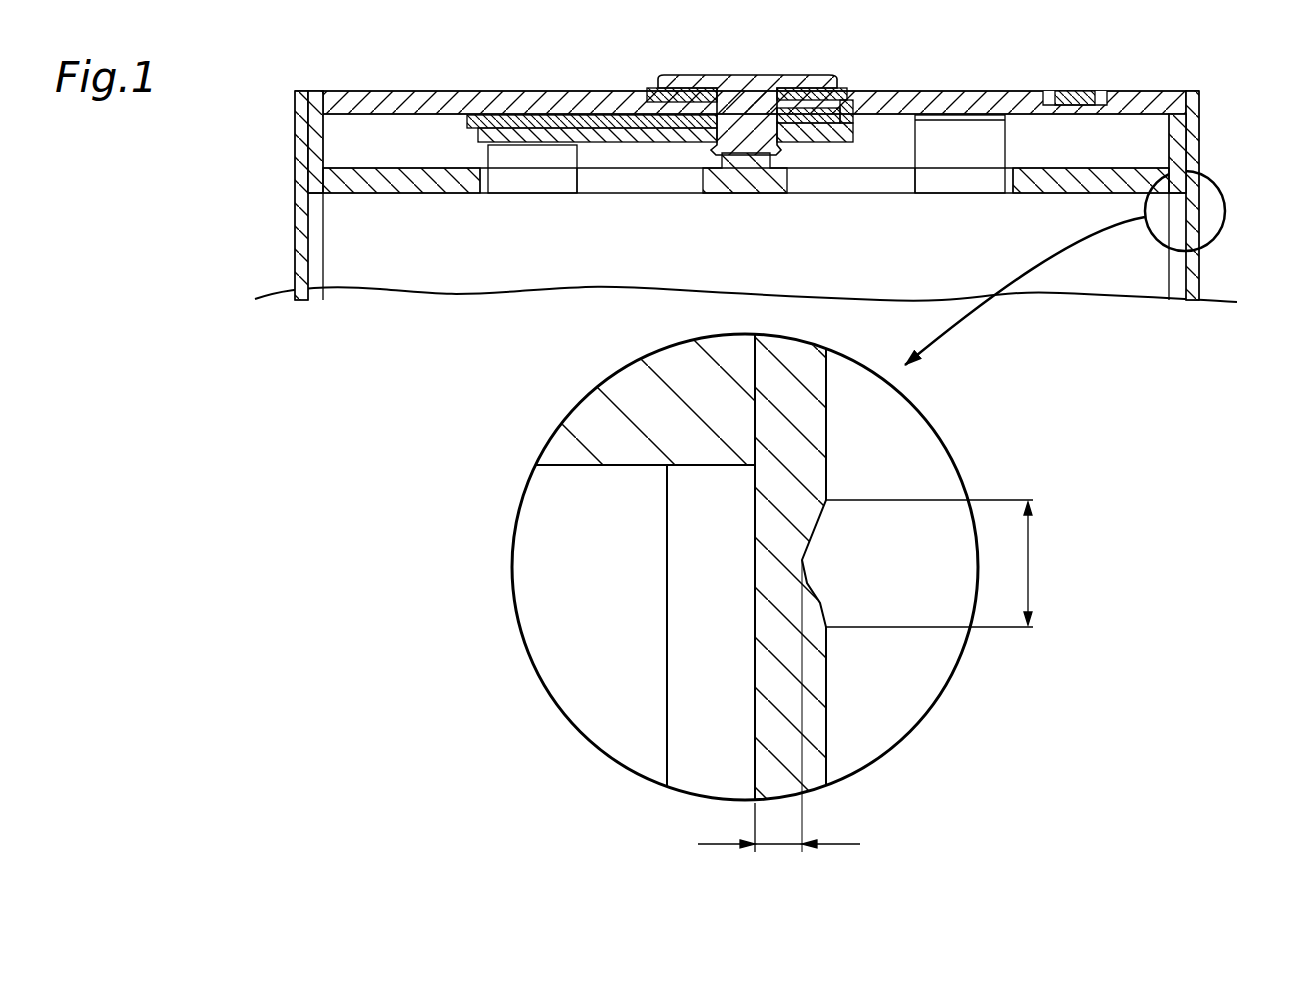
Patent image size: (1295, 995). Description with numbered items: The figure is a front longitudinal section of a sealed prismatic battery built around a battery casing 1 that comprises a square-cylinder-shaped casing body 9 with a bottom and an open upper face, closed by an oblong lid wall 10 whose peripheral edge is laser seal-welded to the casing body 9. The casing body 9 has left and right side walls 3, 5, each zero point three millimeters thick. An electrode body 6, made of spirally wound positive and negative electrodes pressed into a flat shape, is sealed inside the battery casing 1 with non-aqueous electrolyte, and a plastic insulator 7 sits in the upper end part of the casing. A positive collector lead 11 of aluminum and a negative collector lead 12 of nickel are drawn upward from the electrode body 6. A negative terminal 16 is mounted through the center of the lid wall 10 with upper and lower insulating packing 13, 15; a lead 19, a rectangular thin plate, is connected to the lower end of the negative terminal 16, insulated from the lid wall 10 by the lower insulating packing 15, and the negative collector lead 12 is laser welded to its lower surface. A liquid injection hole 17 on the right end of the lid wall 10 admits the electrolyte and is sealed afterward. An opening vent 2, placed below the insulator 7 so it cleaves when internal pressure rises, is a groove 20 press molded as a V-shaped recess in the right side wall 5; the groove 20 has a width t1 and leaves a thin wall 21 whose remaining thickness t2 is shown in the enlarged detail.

The battery casing 1 is at (262, 142).
The opening vent 2 is at (1225, 195).
The left side wall 3 is at (295, 250).
The right side wall 5 is at (1200, 276).
The electrode body 6 is at (500, 265).
The plastic insulator 7 is at (383, 178).
The casing body 9 is at (280, 214).
The lid wall 10 is at (950, 90).
The positive collector lead 11 is at (949, 165).
The negative collector lead 12 is at (536, 175).
The upper insulating packing 13 is at (838, 86).
The lower insulating packing 15 is at (462, 133).
The negative terminal 16 is at (700, 75).
The liquid injection hole 17 is at (1085, 100).
The lead 19 is at (653, 143).
The groove 20 is at (830, 598).
The thin wall 21 is at (773, 563).
The width of the groove t1 is at (1033, 558).
The thickness of the thin wall t2 is at (780, 845).